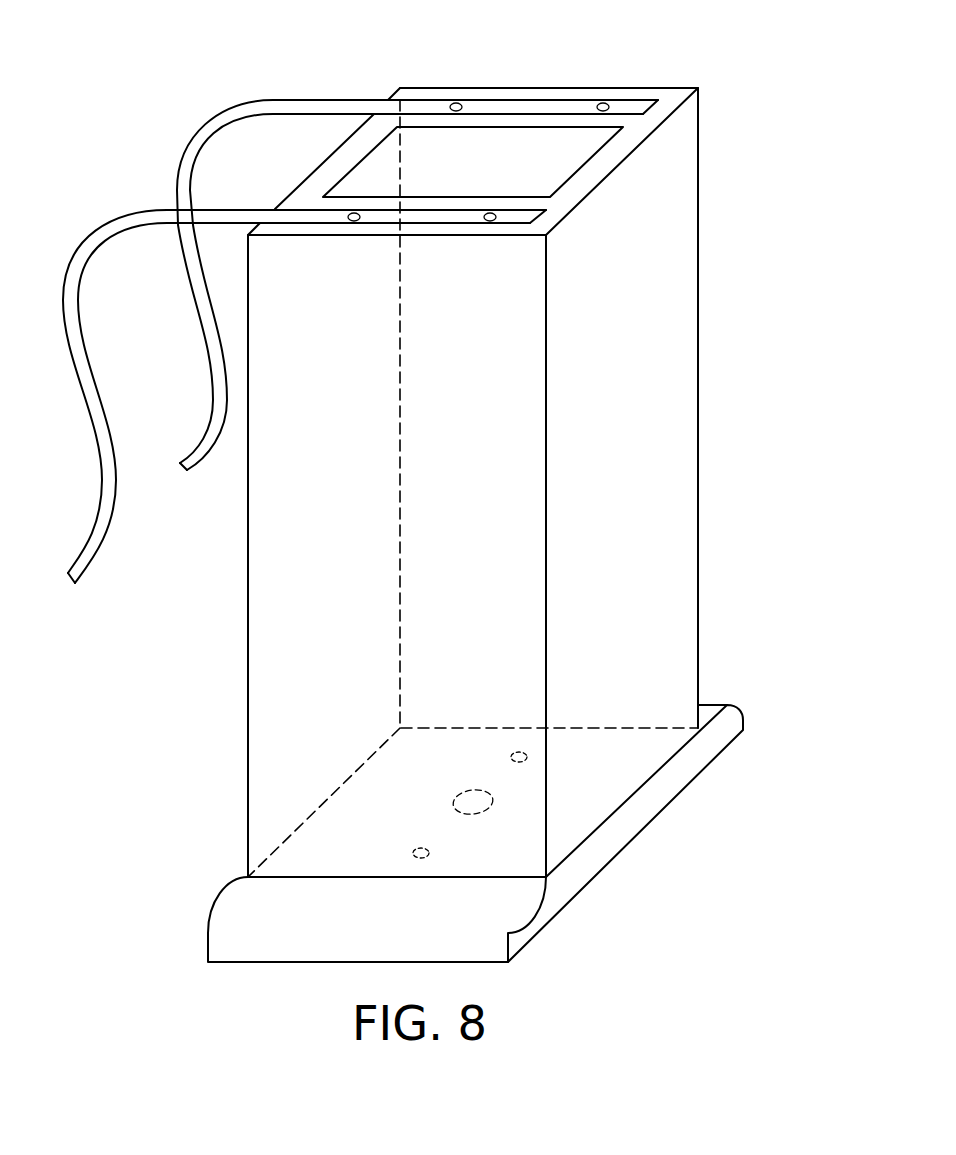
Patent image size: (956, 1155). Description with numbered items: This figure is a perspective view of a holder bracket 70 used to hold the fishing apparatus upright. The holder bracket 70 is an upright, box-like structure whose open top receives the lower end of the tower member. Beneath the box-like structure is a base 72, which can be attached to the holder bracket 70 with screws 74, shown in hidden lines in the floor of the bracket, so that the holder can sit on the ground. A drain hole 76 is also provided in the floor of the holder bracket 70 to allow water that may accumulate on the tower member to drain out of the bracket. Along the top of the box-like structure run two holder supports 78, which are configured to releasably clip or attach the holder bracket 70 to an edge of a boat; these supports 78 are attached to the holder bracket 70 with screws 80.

The holder bracket 70 is at (628, 413).
The base 72 is at (618, 829).
The screws 74 is at (517, 748).
The drain hole 76 is at (458, 790).
The holder supports 78 is at (302, 100).
The screws 80 is at (457, 103).